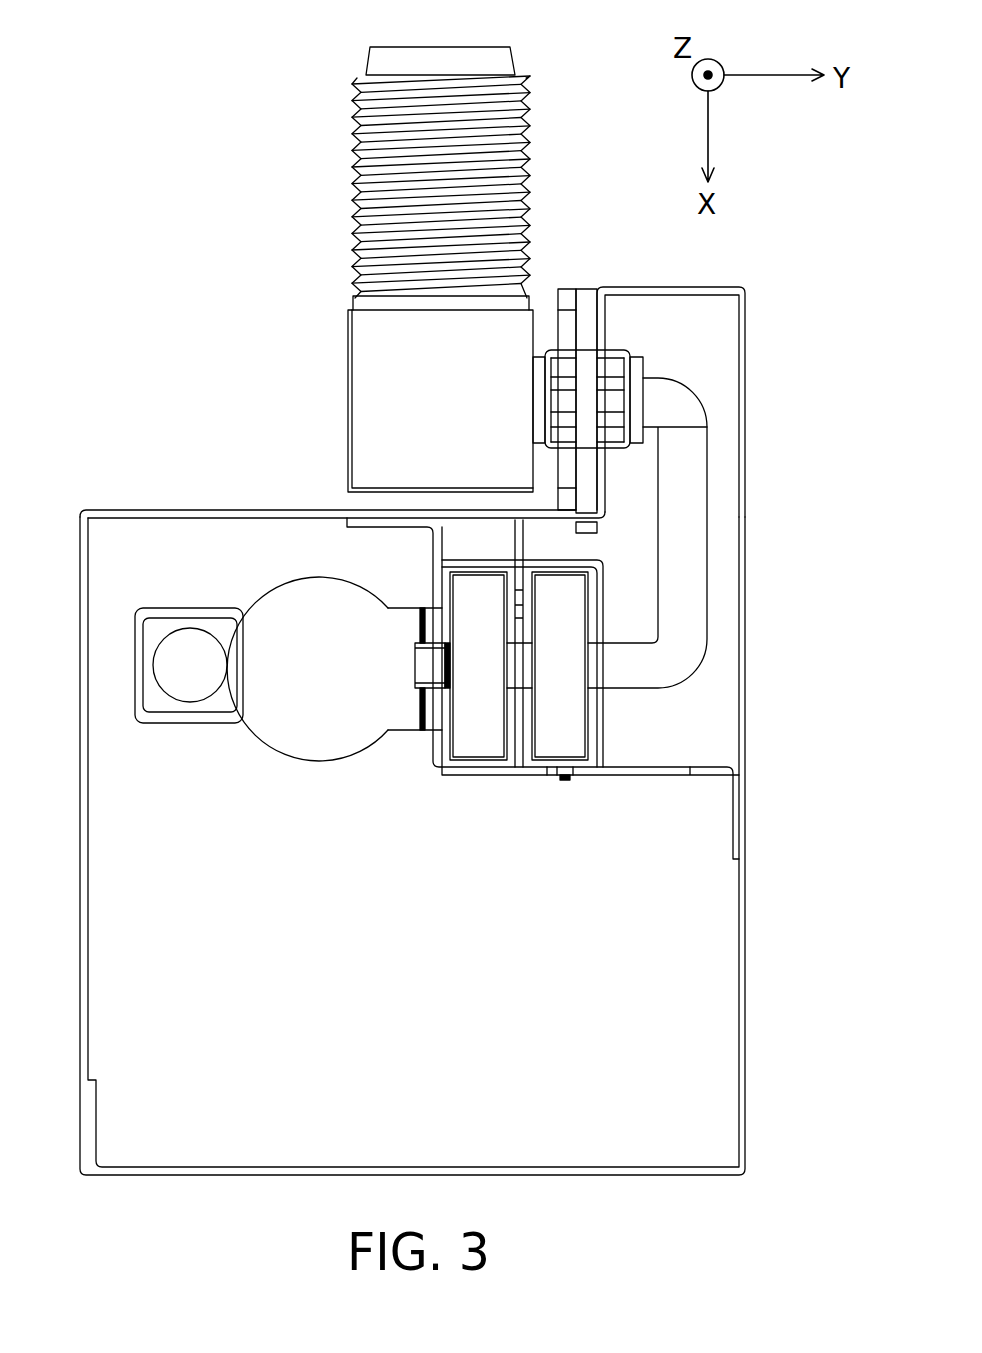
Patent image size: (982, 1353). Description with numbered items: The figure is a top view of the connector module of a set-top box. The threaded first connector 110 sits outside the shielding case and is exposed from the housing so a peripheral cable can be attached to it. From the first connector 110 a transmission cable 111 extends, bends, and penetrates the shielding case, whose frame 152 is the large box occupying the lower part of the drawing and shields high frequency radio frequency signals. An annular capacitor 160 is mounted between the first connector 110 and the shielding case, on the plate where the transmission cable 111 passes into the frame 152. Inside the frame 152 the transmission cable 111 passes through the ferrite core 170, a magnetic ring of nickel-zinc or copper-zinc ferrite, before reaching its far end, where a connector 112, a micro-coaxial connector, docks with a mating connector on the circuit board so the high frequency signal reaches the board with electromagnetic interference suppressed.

The first connector 110 is at (357, 192).
The transmission cable 111 is at (692, 517).
The connector 112 is at (167, 610).
The frame 152 is at (745, 1025).
The annular capacitor 160 is at (588, 293).
The ferrite core 170 is at (480, 740).